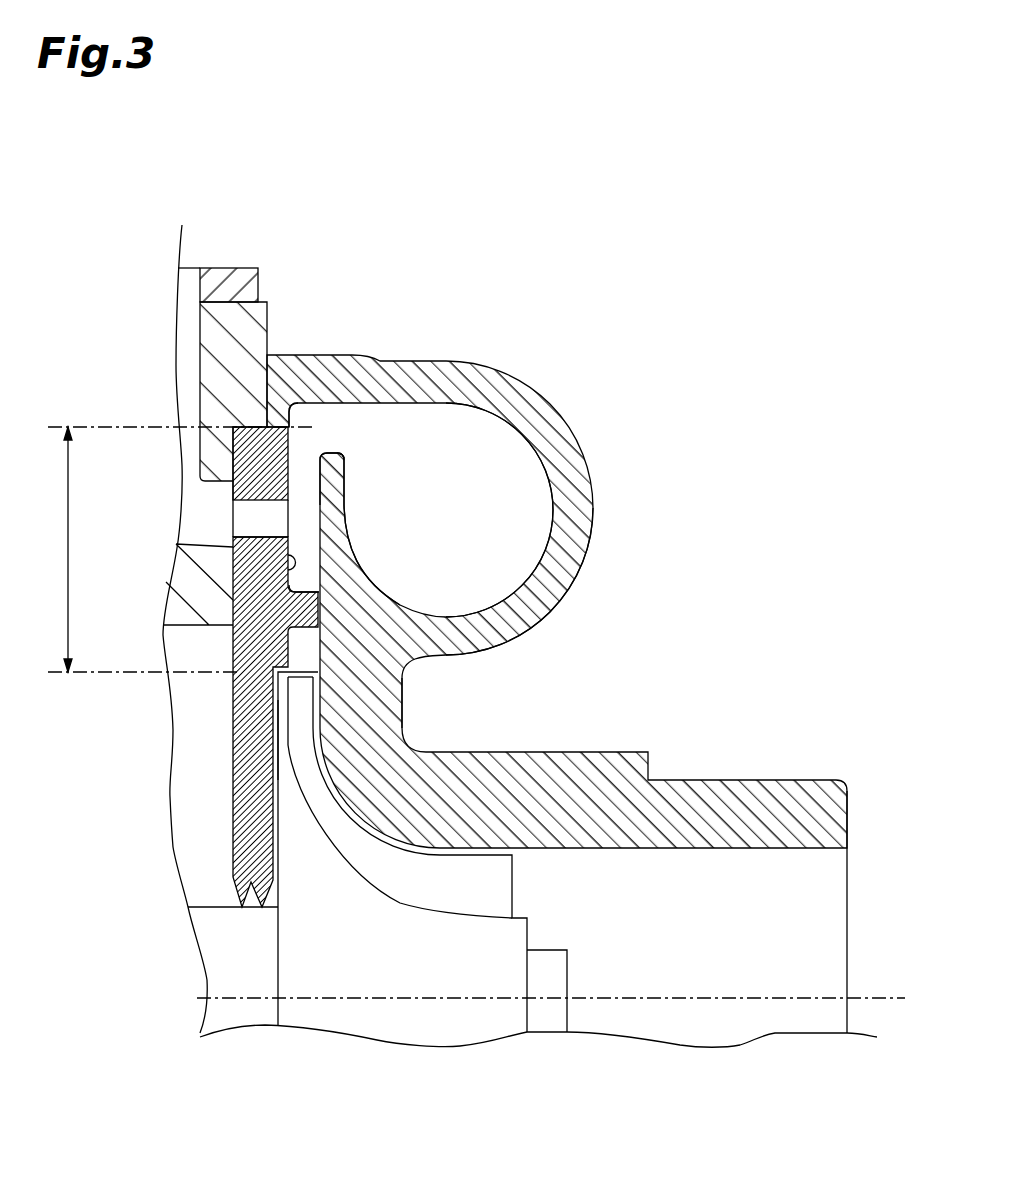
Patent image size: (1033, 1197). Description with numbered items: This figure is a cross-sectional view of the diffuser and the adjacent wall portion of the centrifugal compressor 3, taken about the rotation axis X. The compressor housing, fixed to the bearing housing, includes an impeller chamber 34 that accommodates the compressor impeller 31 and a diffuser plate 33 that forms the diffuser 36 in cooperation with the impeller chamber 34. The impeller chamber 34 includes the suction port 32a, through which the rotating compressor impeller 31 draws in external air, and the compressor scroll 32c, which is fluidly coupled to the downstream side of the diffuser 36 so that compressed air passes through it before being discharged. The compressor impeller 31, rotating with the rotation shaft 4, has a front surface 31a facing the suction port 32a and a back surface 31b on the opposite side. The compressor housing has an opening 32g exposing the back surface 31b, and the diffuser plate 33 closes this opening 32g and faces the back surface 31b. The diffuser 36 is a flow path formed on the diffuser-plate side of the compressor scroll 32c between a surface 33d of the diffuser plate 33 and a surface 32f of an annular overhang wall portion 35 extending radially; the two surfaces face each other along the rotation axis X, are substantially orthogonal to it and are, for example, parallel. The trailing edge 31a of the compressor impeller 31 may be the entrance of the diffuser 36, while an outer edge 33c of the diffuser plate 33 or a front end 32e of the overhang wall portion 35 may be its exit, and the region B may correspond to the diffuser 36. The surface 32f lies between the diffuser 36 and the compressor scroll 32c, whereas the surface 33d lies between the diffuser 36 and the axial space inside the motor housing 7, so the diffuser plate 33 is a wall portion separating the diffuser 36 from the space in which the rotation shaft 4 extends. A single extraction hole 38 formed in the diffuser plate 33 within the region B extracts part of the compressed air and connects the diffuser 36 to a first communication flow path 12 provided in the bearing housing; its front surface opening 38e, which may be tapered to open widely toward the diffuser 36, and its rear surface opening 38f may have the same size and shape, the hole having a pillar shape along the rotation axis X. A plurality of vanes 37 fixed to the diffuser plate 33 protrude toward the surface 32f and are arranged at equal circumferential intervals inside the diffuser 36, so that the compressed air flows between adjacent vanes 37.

The bearing device 3 is at (848, 803).
The rotation shaft 4 is at (222, 965).
The motor housing 7 is at (268, 320).
The first communication flow path 12 is at (267, 345).
The compressor impeller 31 is at (530, 928).
The front surface 31a is at (404, 690).
The back surface 31b is at (275, 742).
The suction port 32a is at (818, 937).
The compressor scroll 32c is at (537, 530).
The front end 32e is at (345, 452).
The surface 32f is at (324, 540).
The opening 32g is at (318, 428).
The diffuser plate 33 is at (234, 826).
The outer edge 33c is at (296, 465).
The surface 33d is at (236, 548).
The impeller chamber 34 is at (553, 780).
The annular overhang wall portion 35 is at (346, 476).
The diffuser 36 is at (308, 578).
The vanes 37 is at (514, 634).
The extraction hole 38 is at (303, 455).
The front surface opening 38e is at (294, 522).
The rear surface opening 38f is at (233, 512).
The region B is at (176, 549).
The rotation axis X is at (880, 998).